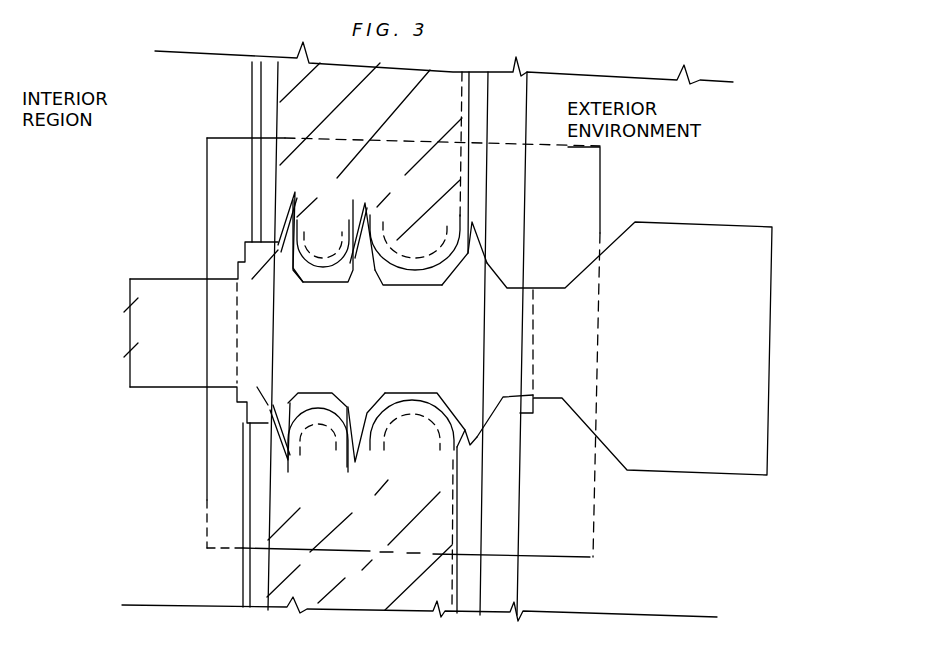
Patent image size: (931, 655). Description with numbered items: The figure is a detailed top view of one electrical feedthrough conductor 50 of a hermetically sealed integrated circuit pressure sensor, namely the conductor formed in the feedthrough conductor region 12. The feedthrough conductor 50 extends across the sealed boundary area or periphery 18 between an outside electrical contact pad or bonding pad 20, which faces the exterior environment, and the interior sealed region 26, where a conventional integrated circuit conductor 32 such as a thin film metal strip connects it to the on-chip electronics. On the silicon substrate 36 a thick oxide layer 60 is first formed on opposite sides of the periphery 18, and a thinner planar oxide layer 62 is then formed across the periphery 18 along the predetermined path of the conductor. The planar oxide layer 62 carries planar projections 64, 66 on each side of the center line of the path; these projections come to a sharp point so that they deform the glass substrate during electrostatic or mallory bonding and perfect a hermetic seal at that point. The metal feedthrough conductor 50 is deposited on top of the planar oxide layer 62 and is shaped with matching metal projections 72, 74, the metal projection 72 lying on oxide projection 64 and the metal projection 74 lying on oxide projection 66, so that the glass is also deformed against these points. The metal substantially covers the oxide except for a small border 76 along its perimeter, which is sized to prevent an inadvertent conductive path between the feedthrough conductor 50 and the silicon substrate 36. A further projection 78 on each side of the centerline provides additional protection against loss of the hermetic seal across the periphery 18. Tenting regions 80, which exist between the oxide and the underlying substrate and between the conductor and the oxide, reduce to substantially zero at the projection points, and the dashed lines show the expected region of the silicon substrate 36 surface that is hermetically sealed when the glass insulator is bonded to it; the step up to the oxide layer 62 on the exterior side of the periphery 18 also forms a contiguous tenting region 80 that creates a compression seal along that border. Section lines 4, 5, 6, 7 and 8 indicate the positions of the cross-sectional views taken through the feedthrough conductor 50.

The section line 4- 4 is at (267, 330).
The section line 5- 5 is at (357, 222).
The section line 6- 6 is at (423, 166).
The section line 7- 7 is at (357, 348).
The section line 8- 8 is at (415, 348).
The feedthrough conductor region 12 is at (210, 500).
The sealed boundary area or periphery 18 is at (508, 576).
The outside electrical contact pad or bonding pad 20 is at (665, 399).
The interior sealed region 26 is at (123, 129).
The integrated circuit conductor 32 is at (176, 279).
The silicon substrate 36 is at (268, 99).
The feedthrough conductor 50 is at (335, 326).
The thick oxide layer 60 is at (172, 586).
The planar oxide layer 62 is at (323, 277).
The planar oxide projection 64 is at (370, 195).
The planar oxide projection 66 is at (318, 182).
The metal projection 72 is at (375, 220).
The metal projection 74 is at (278, 248).
The border 76 is at (352, 272).
The further projection 78 is at (473, 223).
The tenting region 80 is at (470, 113).